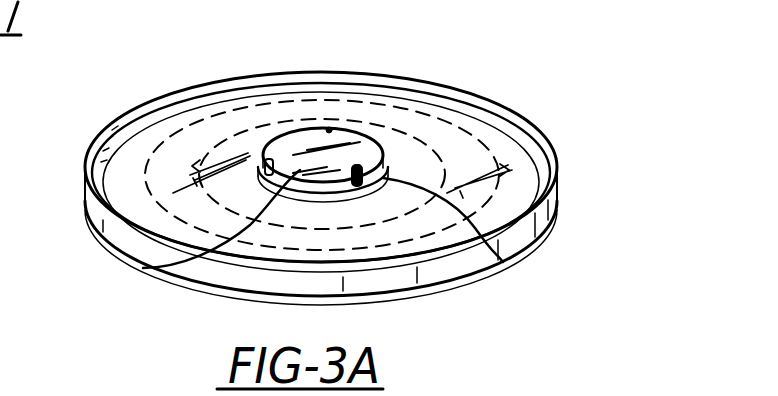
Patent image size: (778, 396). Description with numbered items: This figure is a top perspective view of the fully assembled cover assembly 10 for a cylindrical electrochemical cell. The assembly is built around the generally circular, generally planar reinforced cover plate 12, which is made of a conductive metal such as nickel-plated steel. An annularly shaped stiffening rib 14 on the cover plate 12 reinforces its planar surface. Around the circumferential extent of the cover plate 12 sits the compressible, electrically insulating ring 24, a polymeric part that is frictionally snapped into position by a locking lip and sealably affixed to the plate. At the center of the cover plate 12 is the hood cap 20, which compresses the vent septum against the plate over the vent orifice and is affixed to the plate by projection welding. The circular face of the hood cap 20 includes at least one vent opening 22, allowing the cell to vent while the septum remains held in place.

The cover assembly 10 is at (557, 134).
The reinforced cover plate 12 is at (140, 150).
The stiffening rib 14 is at (445, 130).
The hood cap 20 is at (150, 268).
The vent opening 22 is at (500, 262).
The insulating ring 24 is at (328, 72).